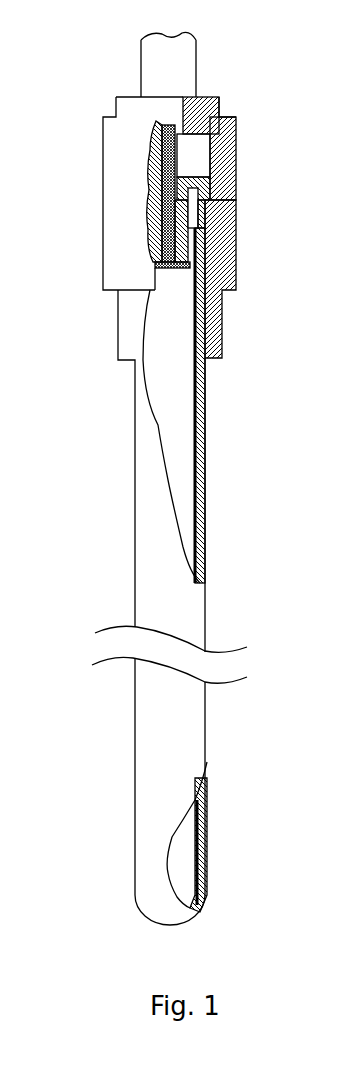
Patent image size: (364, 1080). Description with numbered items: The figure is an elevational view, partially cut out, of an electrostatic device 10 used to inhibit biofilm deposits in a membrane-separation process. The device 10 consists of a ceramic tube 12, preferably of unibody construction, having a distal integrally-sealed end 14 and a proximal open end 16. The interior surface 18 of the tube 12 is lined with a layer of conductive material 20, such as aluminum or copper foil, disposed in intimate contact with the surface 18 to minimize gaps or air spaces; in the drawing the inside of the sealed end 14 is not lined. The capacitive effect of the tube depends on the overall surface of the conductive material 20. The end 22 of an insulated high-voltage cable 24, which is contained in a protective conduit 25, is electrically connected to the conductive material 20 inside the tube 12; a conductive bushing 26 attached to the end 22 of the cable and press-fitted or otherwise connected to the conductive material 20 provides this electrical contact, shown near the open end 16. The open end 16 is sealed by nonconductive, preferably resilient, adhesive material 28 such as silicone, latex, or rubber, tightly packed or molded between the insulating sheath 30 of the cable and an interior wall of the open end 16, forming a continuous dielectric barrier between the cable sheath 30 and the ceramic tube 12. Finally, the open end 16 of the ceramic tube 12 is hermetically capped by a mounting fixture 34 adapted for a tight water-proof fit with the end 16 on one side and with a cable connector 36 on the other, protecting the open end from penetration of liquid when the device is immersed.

The electrostatic device 10 is at (257, 155).
The ceramic tube 12 is at (183, 603).
The distal integrally-sealed end 14 is at (160, 927).
The proximal open end 16 is at (200, 207).
The interior surface 18 is at (203, 908).
The layer of conductive material 20 is at (190, 392).
The end of the cable 22 is at (160, 253).
The high-voltage cable 24 is at (163, 155).
The protective conduit 25 is at (178, 73).
The conductive bushing 26 is at (153, 263).
The nonconductive adhesive material 28 is at (155, 212).
The insulating sheath 30 is at (236, 135).
The mounting fixture 34 is at (222, 270).
The cable connector 36 is at (205, 102).